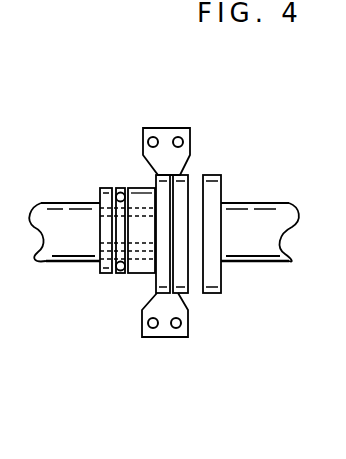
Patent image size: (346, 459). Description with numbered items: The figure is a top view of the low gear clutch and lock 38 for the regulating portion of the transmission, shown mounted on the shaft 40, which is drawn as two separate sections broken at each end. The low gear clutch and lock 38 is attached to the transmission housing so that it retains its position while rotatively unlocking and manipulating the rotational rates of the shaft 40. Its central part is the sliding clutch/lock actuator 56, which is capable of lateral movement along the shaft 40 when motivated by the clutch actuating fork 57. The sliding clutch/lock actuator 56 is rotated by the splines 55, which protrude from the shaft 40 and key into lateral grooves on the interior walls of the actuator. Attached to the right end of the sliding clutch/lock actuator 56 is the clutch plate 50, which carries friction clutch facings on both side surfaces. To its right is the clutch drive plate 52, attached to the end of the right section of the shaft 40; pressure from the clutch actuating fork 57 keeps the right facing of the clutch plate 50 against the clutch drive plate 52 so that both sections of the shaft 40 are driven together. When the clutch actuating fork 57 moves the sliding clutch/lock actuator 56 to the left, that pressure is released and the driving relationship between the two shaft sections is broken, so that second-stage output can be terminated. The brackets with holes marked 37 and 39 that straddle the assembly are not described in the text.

The mounting holes 37 is at (168, 138).
The low gear clutch and lock 38 is at (163, 128).
The lower bracket 39 is at (157, 284).
The shaft 40 is at (43, 263).
The clutch plate 50 is at (187, 175).
The clutch drive plate 52 is at (223, 175).
The splines 55 is at (99, 210).
The sliding clutch/lock actuator 56 is at (112, 274).
The clutch actuating fork 57 is at (120, 188).